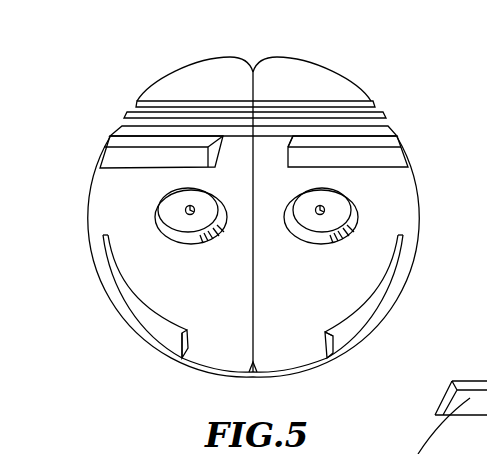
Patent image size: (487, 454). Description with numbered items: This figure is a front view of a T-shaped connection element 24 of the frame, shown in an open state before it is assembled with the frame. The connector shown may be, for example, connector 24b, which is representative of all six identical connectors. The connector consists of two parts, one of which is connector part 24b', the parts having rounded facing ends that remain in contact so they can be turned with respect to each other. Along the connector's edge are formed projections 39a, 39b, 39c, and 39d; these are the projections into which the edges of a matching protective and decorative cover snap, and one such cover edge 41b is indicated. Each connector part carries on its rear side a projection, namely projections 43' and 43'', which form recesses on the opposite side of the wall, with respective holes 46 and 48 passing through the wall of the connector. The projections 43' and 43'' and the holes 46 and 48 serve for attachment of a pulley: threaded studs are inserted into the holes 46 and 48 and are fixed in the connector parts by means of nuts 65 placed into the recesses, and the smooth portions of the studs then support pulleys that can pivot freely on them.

The T-shaped connection element 24 is at (422, 252).
The connector 24b is at (267, 60).
The connector part 24b' is at (137, 222).
The nut 65 is at (297, 95).
The projection 39a is at (140, 320).
The projection 39b is at (122, 157).
The projection 39c is at (395, 152).
The projection 39d is at (375, 313).
The projection 43' is at (137, 216).
The projection 43'' is at (376, 216).
The hole 46 is at (190, 208).
The hole 48 is at (322, 208).
The edge 41b is at (438, 412).